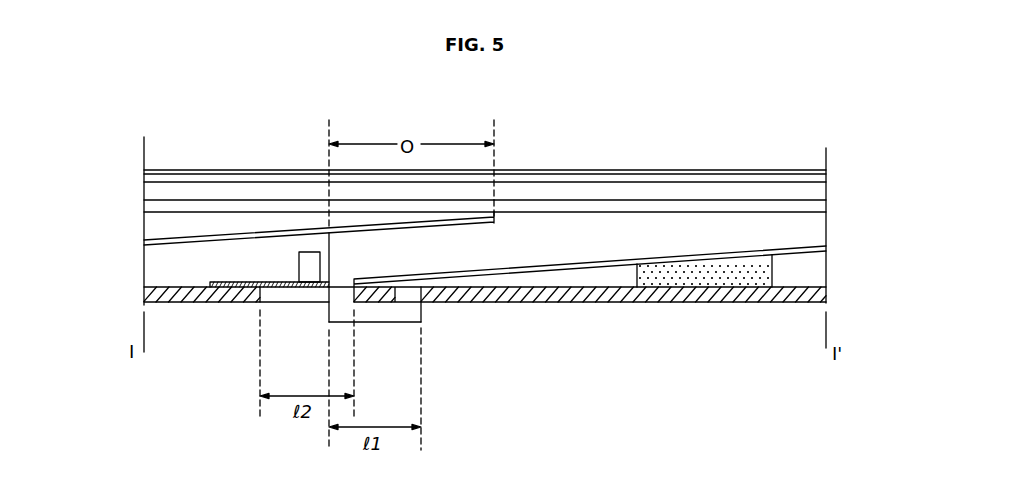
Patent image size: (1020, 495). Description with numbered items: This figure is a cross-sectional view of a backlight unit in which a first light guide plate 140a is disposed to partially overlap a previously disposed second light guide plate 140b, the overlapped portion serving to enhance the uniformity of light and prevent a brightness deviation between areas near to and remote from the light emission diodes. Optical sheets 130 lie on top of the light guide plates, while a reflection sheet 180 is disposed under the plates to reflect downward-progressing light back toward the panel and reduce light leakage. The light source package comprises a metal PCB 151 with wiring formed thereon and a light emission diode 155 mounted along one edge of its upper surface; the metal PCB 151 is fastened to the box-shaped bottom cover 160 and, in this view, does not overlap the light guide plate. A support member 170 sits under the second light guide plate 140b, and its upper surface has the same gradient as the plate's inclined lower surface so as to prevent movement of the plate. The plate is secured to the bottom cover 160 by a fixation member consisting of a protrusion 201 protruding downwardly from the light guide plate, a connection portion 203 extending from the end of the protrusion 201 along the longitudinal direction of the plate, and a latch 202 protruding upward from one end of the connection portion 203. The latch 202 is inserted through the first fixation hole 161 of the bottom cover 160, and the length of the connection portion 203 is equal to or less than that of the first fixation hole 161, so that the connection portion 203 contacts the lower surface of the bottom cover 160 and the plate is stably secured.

The optical sheets 130 is at (829, 168).
The first light guide plate 140a is at (153, 225).
The second light guide plate 140b is at (822, 235).
The reflection sheet 180 is at (188, 240).
The metal PCB 151 is at (244, 283).
The light emission diode 155 is at (312, 256).
The bottom cover 160 is at (776, 300).
The first fixation hole 161 is at (297, 295).
The support member 170 is at (689, 273).
The protrusion 201 is at (342, 293).
The latch 202 is at (397, 291).
The connection portion 203 is at (382, 318).